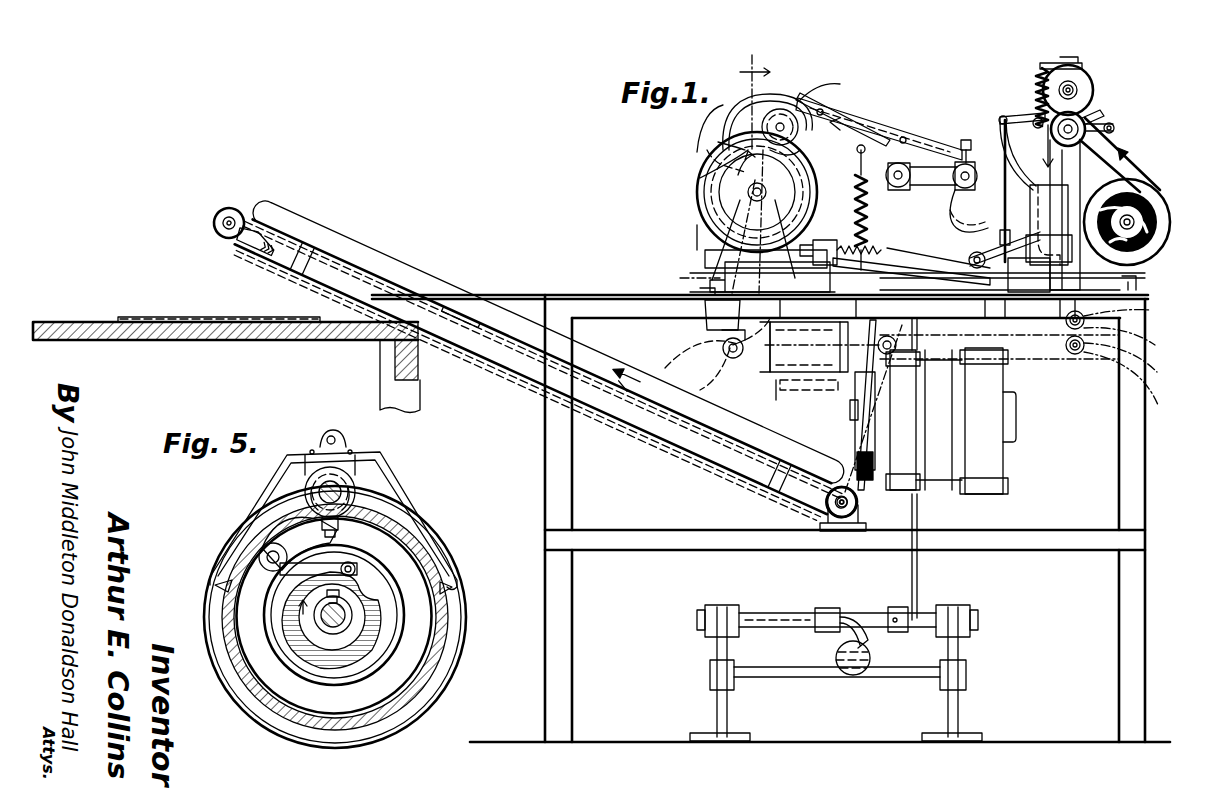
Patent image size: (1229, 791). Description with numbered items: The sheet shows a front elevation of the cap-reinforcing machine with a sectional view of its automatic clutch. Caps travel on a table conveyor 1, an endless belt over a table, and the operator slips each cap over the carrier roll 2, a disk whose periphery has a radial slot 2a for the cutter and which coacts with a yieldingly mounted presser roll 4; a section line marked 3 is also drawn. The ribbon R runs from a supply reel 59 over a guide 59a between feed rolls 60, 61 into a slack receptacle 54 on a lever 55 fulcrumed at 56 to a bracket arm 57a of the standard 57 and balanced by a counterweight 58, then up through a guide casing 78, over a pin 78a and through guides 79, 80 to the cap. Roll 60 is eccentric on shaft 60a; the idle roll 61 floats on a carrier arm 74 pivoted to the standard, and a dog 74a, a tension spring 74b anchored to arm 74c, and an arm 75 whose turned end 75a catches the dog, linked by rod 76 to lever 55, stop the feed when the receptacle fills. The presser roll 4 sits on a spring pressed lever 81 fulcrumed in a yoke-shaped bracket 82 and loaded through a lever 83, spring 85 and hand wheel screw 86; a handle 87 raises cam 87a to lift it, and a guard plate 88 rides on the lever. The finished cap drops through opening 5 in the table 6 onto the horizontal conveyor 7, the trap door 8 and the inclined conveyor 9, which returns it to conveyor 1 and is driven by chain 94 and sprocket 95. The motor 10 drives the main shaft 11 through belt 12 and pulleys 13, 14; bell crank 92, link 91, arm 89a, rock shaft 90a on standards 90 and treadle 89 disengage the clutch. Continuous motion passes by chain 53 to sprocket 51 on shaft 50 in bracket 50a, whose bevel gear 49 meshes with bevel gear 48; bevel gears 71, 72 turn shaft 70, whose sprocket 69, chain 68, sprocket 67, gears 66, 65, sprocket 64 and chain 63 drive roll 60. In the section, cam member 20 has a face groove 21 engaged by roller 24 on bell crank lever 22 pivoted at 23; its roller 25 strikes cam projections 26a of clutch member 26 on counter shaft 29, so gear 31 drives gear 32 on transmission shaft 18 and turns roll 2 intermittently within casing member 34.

In FIG. 1, the table conveyor 1 is at (187, 320).
In FIG. 1, the carrier roll 2 is at (717, 205).
In FIG. 1, the radial slot 2a is at (722, 178).
In FIG. 1, the section line / cutter 3 is at (657, 395).
In FIG. 1, the presser roll 4 is at (784, 110).
In FIG. 1, the opening 5 is at (790, 294).
In FIG. 1, the table 6 is at (662, 294).
In FIG. 1, the transverse horizontal conveyor 7 is at (770, 366).
In FIG. 1, the trap door 8 is at (796, 386).
In FIG. 1, the inclined elevating conveyor 9 is at (694, 370).
In FIG. 1, the motor 10 is at (985, 418).
In FIG. 1, the main shaft 11 is at (771, 235).
In FIG. 1, the belt 12 is at (840, 372).
In FIG. 1, the belt pulley 13 is at (852, 410).
In FIG. 1, the belt pulley 14 is at (860, 248).
In FIG. 5, the transmission shaft 18 is at (352, 615).
In FIG. 5, the cam member 20 is at (280, 650).
In FIG. 5, the cam groove 21 is at (310, 655).
In FIG. 5, the bell crank lever 22 is at (285, 535).
In FIG. 5, the fixed pivot 23 is at (258, 555).
In FIG. 5, the roller 24 is at (357, 570).
In FIG. 5, the roller 25 is at (340, 522).
In FIG. 5, the clutch member 26 is at (348, 496).
In FIG. 5, the cam projections 26a is at (365, 512).
In FIG. 5, the counter shaft 29 is at (316, 486).
In FIG. 1, the gear 31 is at (740, 118).
In FIG. 1, the gear 32 is at (735, 150).
In FIG. 5, the casing member 34 is at (466, 618).
In FIG. 1, the bevel gear 48 is at (740, 345).
In FIG. 1, the bevel gear 49 is at (722, 346).
In FIG. 1, the shaft 50 is at (728, 358).
In FIG. 1, the bracket 50a is at (712, 326).
In FIG. 1, the sprocket 51 is at (690, 350).
In FIG. 1, the chain 53 is at (712, 222).
In FIG. 1, the receptacle 54 is at (1140, 280).
In FIG. 1, the lever 55 is at (1029, 275).
In FIG. 1, the fulcrum 56 is at (964, 248).
In FIG. 1, the standard frame 57 is at (1072, 175).
In FIG. 1, the bracket arm 57a is at (1042, 305).
In FIG. 1, the counterweight 58 is at (983, 305).
In FIG. 1, the supply reel 59 is at (1170, 224).
In FIG. 1, the guide 59a is at (1094, 118).
In FIG. 1, the feed roll 60 is at (1085, 80).
In FIG. 1, the shaft 60a is at (1075, 90).
In FIG. 1, the idle feed roll 61 is at (1081, 138).
In FIG. 1, the chain 63 is at (1132, 315).
In FIG. 1, the sprocket 64 is at (1134, 345).
In FIG. 1, the gear 65 is at (1066, 322).
In FIG. 1, the gear 66 is at (1134, 367).
In FIG. 1, the sprocket 67 is at (1134, 390).
In FIG. 1, the chain 68 is at (1068, 352).
In FIG. 1, the sprocket 69 is at (898, 346).
In FIG. 1, the shaft 70 is at (896, 340).
In FIG. 1, the bevel gear 71 is at (924, 420).
In FIG. 1, the bevel gear 72 is at (872, 405).
In FIG. 1, the carrier arm 74 is at (1115, 127).
In FIG. 1, the dog 74a is at (1026, 148).
In FIG. 1, the tension spring 74b is at (1040, 80).
In FIG. 1, the arm 74c is at (1042, 64).
In FIG. 1, the arm 75 is at (1022, 116).
In FIG. 1, the angularly turned end 75a is at (1025, 136).
In FIG. 1, the link rod 76 is at (1003, 135).
In FIG. 1, the guide casing 78 is at (1034, 215).
In FIG. 1, the pin 78a is at (1001, 155).
In FIG. 1, the guide 79 is at (962, 140).
In FIG. 1, the guide 80 is at (826, 81).
In FIG. 1, the spring pressed lever 81 is at (878, 130).
In FIG. 1, the yoke-shaped bracket 82 is at (955, 190).
In FIG. 1, the lever 83 is at (950, 214).
In FIG. 1, the spring 85 is at (905, 150).
In FIG. 1, the hand wheel screw 86 is at (990, 250).
In FIG. 1, the handle 87 is at (876, 207).
In FIG. 1, the cam 87a is at (923, 172).
In FIG. 1, the guard plate 88 is at (850, 128).
In FIG. 1, the treadle lever 89 is at (838, 650).
In FIG. 1, the arm 89a is at (898, 606).
In FIG. 1, the standards 90 is at (962, 652).
In FIG. 1, the rock shaft 90a is at (772, 615).
In FIG. 1, the link 91 is at (920, 580).
In FIG. 1, the bell crank lever 92 is at (852, 298).
In FIG. 1, the chain 94 is at (870, 484).
In FIG. 1, the sprocket 95 is at (826, 508).
In FIG. 1, the ribbon R is at (1148, 160).